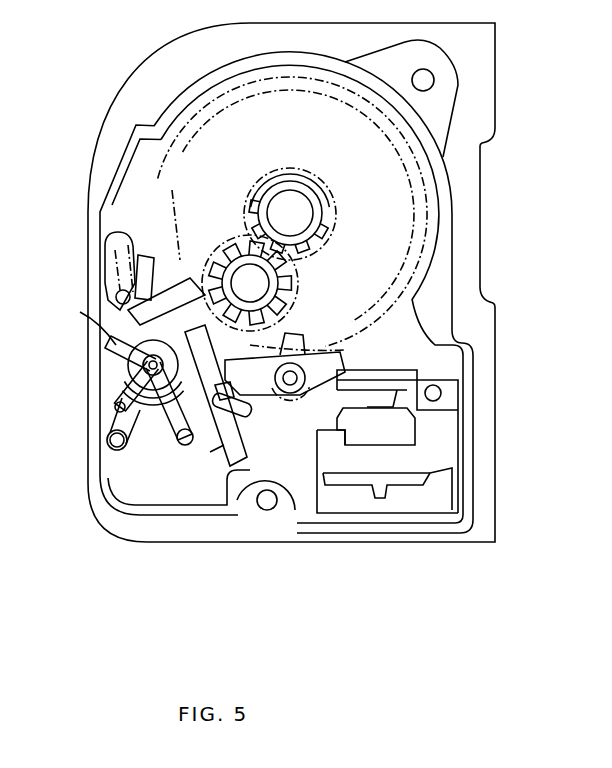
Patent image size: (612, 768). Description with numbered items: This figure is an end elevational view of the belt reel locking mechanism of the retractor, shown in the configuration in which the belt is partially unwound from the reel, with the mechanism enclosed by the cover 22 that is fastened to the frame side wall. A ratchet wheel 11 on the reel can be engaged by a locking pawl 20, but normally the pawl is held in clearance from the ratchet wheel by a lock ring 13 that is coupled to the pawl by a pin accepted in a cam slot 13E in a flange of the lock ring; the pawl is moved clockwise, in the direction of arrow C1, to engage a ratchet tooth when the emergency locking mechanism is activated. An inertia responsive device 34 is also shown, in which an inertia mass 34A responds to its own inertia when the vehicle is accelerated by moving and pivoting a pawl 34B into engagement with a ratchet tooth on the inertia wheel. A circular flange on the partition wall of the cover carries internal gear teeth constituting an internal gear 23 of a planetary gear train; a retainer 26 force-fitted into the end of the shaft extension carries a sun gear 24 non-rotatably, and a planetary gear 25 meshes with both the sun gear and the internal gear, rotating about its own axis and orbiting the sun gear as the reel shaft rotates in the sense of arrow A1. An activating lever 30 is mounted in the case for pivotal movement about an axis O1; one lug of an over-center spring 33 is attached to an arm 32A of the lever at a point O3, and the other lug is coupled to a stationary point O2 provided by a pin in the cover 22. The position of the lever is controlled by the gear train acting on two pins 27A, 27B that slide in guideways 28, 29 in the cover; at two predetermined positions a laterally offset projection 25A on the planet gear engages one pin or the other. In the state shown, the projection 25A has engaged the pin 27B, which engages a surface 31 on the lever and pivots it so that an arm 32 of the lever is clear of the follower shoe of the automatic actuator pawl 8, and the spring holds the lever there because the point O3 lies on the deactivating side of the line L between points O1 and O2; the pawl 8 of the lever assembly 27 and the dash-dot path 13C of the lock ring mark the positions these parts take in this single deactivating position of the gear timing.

The cover 22 is at (118, 100).
The ratchet wheel 11 is at (157, 243).
The cam slot 13E is at (108, 238).
The locking pawl 20 is at (125, 285).
The internal gear 23 is at (174, 203).
The planetary gear 25 is at (233, 245).
The retainer 26 is at (307, 213).
The sun gear 24 is at (306, 247).
The projection 25A is at (286, 322).
The activating lever 30 is at (113, 325).
The pin 27A is at (113, 347).
The pivot lever 27 is at (110, 352).
The guideway 28 is at (150, 352).
The arm 32A is at (116, 408).
The over-center spring 33 is at (130, 450).
The arm 32 is at (226, 480).
The pin 27B is at (182, 446).
The surface 31 is at (204, 458).
The automatic actuator pawl 8 is at (245, 411).
The guideway 29 is at (273, 395).
The lever path 13C is at (311, 348).
The lock ring 13 is at (364, 370).
The pawl 34B is at (383, 367).
The inertia mass 34A is at (407, 432).
The inertia responsive device 34 is at (433, 493).
The axis O1 is at (150, 367).
The stationary point O2 is at (115, 449).
The point O3 is at (112, 430).
The rotation direction A1 is at (226, 190).
The arrow C1 is at (141, 285).
The line L is at (154, 455).